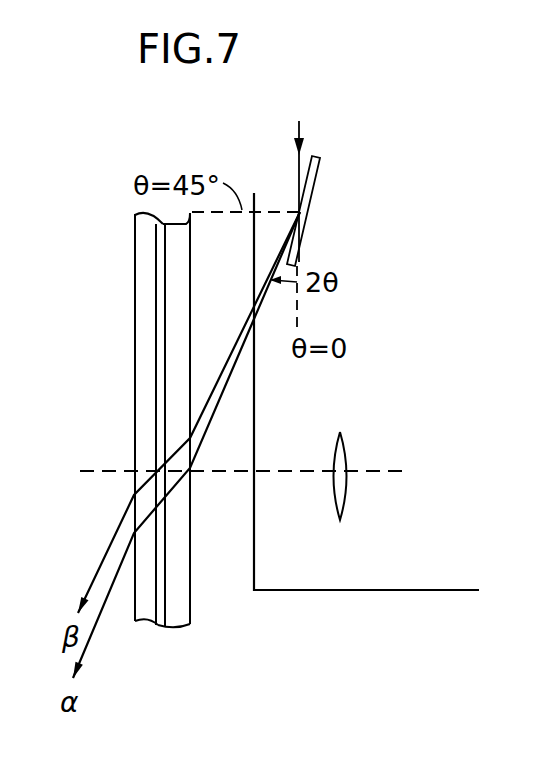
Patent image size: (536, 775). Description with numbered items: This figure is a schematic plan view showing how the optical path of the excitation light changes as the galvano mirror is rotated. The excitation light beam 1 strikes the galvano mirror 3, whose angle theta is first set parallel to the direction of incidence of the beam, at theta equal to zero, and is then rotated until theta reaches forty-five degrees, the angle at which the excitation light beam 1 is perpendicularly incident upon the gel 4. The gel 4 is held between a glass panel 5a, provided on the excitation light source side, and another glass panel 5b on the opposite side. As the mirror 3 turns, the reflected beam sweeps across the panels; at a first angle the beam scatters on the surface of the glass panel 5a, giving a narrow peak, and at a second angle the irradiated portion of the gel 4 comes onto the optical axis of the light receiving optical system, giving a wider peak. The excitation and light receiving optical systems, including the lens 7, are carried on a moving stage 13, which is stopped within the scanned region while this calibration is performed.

The excitation light beam 1 is at (300, 132).
The galvano mirror 3 is at (318, 178).
The gel 4 is at (160, 623).
The glass panel 5a is at (192, 587).
The glass panel 5b is at (132, 618).
The lens 7 is at (340, 520).
The moving stage 13 is at (447, 591).